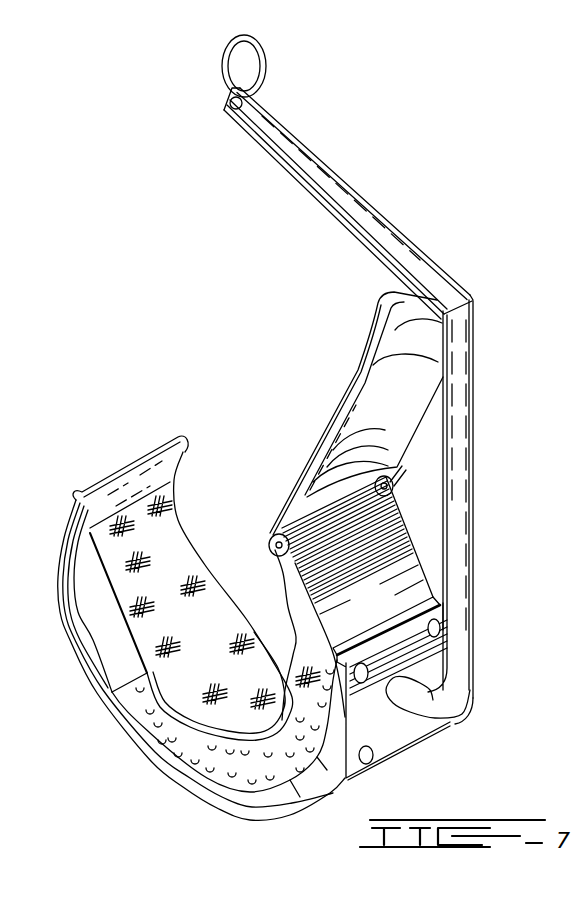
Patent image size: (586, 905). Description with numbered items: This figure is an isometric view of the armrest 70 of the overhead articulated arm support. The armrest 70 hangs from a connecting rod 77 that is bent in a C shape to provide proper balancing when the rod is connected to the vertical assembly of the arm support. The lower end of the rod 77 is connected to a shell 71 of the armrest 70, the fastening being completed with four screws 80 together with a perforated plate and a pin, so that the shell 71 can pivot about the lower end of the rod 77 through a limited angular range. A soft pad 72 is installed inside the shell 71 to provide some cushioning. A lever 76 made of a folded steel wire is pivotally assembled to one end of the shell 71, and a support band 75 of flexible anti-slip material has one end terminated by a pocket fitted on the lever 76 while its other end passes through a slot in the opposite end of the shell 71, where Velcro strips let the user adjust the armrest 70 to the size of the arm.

The armrest 70 is at (454, 221).
The shell 71 is at (385, 547).
The soft pad 72 is at (210, 778).
The support band 75 is at (187, 563).
The lever 76 is at (283, 535).
The connecting rod 77 is at (466, 445).
The screws 80 is at (434, 640).